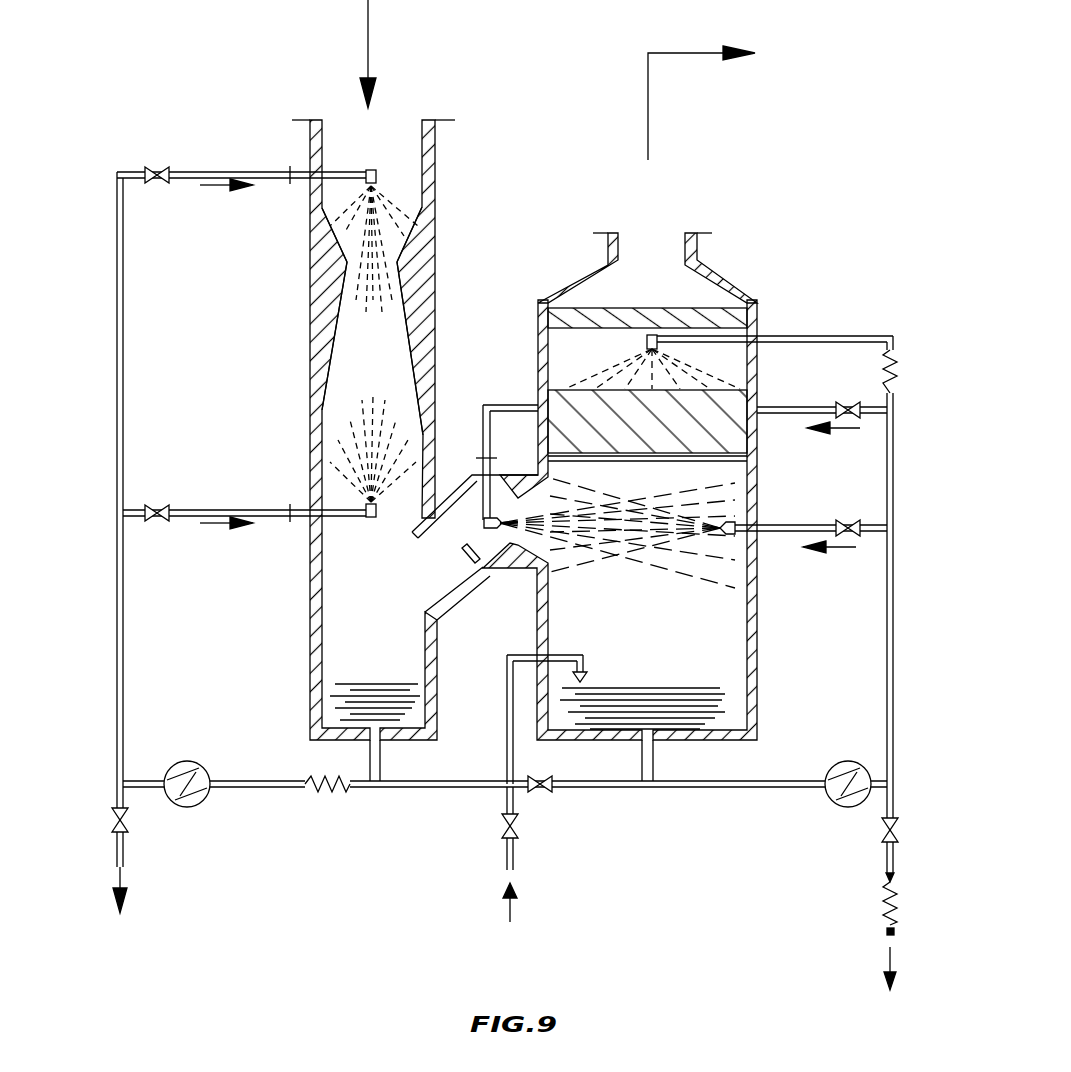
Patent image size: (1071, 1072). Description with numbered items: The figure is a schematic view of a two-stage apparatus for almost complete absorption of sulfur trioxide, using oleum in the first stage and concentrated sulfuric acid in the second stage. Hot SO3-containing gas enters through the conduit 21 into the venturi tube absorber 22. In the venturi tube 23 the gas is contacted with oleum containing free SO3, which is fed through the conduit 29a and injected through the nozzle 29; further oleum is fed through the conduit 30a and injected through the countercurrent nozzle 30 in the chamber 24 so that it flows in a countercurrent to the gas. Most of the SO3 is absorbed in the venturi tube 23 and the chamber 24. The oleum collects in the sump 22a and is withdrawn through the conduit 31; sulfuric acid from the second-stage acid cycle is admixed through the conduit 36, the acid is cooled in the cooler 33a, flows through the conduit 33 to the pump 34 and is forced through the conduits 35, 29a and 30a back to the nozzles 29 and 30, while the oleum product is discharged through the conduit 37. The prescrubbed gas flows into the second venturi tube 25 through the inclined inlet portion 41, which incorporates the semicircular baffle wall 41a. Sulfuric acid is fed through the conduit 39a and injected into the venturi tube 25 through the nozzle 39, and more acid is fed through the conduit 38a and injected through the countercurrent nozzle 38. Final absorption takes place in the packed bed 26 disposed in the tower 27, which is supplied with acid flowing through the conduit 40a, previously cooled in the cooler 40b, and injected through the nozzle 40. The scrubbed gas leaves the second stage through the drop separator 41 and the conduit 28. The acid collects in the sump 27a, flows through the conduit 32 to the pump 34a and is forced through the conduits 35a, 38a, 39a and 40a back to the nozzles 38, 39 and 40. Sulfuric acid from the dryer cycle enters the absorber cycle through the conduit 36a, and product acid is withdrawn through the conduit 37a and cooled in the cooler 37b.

The conduit 21 is at (362, 35).
The venturi tube absorber 22 is at (435, 151).
The sump 22a is at (425, 703).
The venturi tube 23 is at (405, 236).
The chamber 24 is at (407, 448).
The venturi tube 25 is at (495, 497).
The packed bed 26 is at (735, 437).
The tower 27 is at (758, 484).
The sump 27a is at (728, 703).
The conduit 28 is at (658, 53).
The nozzle 29 is at (376, 181).
The conduit 29a is at (200, 173).
The countercurrent nozzle 30 is at (378, 512).
The conduit 30a is at (200, 511).
The conduit 31 is at (380, 764).
The conduit 32 is at (653, 765).
The conduit 33 is at (272, 788).
The cooler 33a is at (330, 791).
The pump 34 is at (199, 765).
The pump 34a is at (851, 775).
The conduit 35 is at (128, 788).
The conduit 35a is at (870, 795).
The conduit 36 is at (572, 788).
The conduit 36a is at (515, 857).
The conduit 37 is at (123, 855).
The conduit 37a is at (885, 858).
The cooler 37b is at (886, 905).
The countercurrent nozzle 38 is at (725, 536).
The conduit 38a is at (773, 532).
The nozzle 39 is at (482, 527).
The conduit 39a is at (783, 398).
The nozzle 40 is at (645, 343).
The conduit 40a is at (828, 337).
The cooler 40b is at (884, 373).
The drop separator 41 is at (742, 321).
The semicircular baffle wall 41a is at (467, 562).